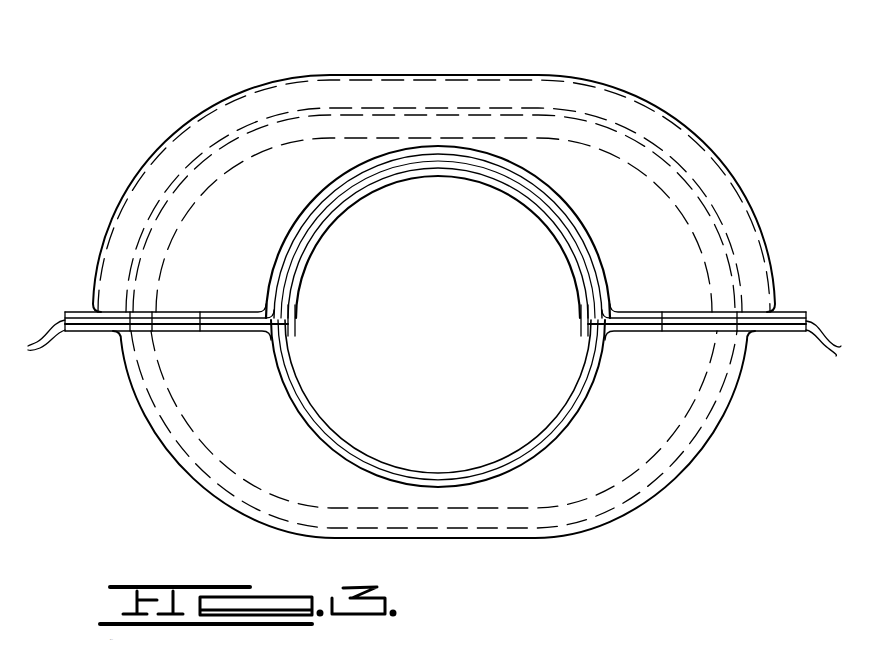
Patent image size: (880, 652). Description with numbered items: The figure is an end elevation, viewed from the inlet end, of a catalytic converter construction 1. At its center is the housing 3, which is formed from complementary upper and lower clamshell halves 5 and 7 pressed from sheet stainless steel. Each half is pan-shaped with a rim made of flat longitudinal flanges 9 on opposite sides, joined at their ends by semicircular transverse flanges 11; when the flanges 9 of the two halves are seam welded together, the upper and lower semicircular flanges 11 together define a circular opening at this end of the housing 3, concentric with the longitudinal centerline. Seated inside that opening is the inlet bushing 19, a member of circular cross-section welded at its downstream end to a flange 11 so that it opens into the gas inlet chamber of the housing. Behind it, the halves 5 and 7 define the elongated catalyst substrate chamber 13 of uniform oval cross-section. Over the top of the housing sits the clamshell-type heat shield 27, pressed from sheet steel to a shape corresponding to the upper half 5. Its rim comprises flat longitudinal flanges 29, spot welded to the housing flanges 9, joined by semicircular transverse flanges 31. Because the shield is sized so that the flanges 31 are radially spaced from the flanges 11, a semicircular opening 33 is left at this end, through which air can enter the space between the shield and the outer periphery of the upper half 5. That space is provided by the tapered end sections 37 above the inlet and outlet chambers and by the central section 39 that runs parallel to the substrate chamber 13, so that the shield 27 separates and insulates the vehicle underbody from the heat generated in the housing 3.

The catalytic converter construction 1 is at (705, 103).
The housing 3 is at (434, 419).
The upper clamshell half 5 is at (729, 233).
The lower clamshell half 7 is at (713, 434).
The longitudinal flanges 9 is at (436, 344).
The semicircular transverse flanges 11 is at (562, 231).
The catalyst substrate chamber 13 is at (642, 500).
The inlet bushing 19 is at (288, 323).
The heat shield 27 is at (618, 87).
The longitudinal flanges of heat shield 29 is at (72, 312).
The semicircular transverse flanges of heat shield 31 is at (546, 184).
The semicircular openings 33 is at (414, 150).
The tapered end sections 37 is at (667, 248).
The central section 39 is at (337, 75).